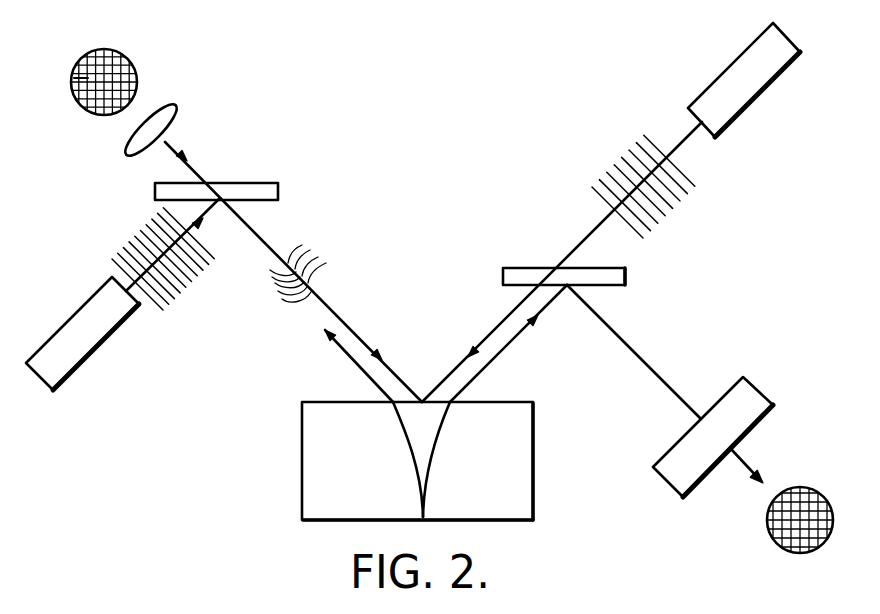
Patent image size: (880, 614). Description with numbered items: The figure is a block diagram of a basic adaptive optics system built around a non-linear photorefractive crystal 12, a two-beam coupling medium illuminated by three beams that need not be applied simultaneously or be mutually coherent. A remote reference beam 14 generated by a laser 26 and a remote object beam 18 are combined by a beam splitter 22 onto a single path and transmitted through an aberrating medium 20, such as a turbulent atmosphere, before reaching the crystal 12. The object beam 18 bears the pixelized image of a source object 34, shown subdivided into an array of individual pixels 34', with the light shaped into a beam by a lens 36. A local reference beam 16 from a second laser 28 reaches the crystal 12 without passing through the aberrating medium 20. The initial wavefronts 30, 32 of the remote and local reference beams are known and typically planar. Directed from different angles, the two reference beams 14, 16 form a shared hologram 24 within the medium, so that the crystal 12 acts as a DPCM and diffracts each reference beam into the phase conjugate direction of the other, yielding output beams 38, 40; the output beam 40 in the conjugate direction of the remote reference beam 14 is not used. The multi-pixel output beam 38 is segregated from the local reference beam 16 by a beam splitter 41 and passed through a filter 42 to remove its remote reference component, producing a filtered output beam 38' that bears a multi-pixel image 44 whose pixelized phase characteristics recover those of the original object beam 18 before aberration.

The non-linear photorefractive crystal 12 is at (302, 478).
The remote reference beam 14 is at (217, 207).
The local reference beam 16 is at (582, 240).
The remote object beam 18 is at (197, 167).
The aberrating medium 20 is at (315, 270).
The beam splitter 22 is at (278, 183).
The shared hologram 24 is at (442, 423).
The laser 26 is at (55, 390).
The laser 28 is at (688, 108).
The initial wavefront 30 is at (168, 297).
The initial wavefront 32 is at (619, 160).
The source object 34 is at (124, 77).
The individual pixels 34' is at (60, 59).
The lens 36 is at (184, 88).
The output beam 38 is at (575, 352).
The filtered output beam 38' is at (769, 446).
The output beam 40 is at (350, 358).
The beam splitter 41 is at (625, 285).
The filter 42 is at (745, 375).
The multi-pixel image 44 is at (773, 539).